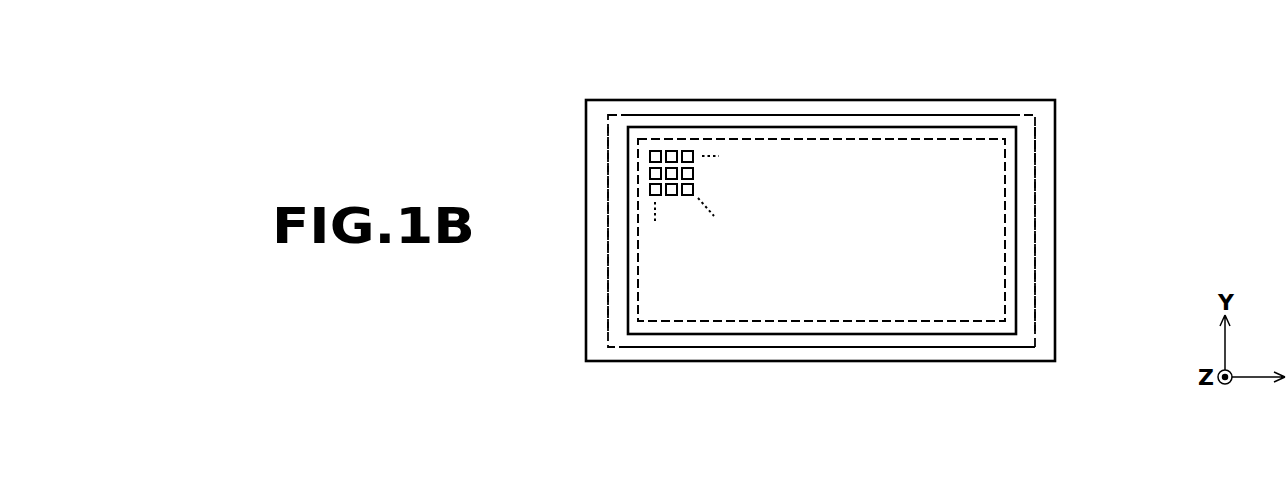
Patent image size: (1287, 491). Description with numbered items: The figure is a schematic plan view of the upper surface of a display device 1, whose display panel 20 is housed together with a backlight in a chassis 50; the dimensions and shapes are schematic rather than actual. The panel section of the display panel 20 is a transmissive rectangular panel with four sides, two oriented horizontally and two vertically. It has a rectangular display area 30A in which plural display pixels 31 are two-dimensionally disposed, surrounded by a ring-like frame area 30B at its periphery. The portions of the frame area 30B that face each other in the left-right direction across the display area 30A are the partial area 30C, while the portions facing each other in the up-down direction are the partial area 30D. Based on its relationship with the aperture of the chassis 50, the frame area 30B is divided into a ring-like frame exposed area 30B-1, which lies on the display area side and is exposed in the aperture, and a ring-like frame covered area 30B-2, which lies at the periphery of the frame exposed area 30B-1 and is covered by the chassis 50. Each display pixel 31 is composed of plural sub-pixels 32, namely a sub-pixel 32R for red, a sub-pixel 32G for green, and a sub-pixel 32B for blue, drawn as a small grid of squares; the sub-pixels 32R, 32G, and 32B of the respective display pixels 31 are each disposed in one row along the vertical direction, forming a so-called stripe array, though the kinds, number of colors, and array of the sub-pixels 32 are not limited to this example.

The display device 1 is at (1075, 108).
The display panel 20 is at (1037, 205).
The display area 30A is at (943, 168).
The frame area 30B is at (1027, 248).
The frame exposed area 30B-1 is at (1005, 297).
The frame covered area 30B-2 is at (1027, 340).
The partial area 30C is at (1027, 148).
The partial area 30D is at (811, 118).
The display pixel 31 is at (738, 55).
The sub-pixel 32 is at (632, 187).
The sub-pixel for red 32R is at (652, 152).
The sub-pixel for green 32G is at (670, 152).
The sub-pixel for blue 32B is at (687, 152).
The chassis 50 is at (1012, 113).